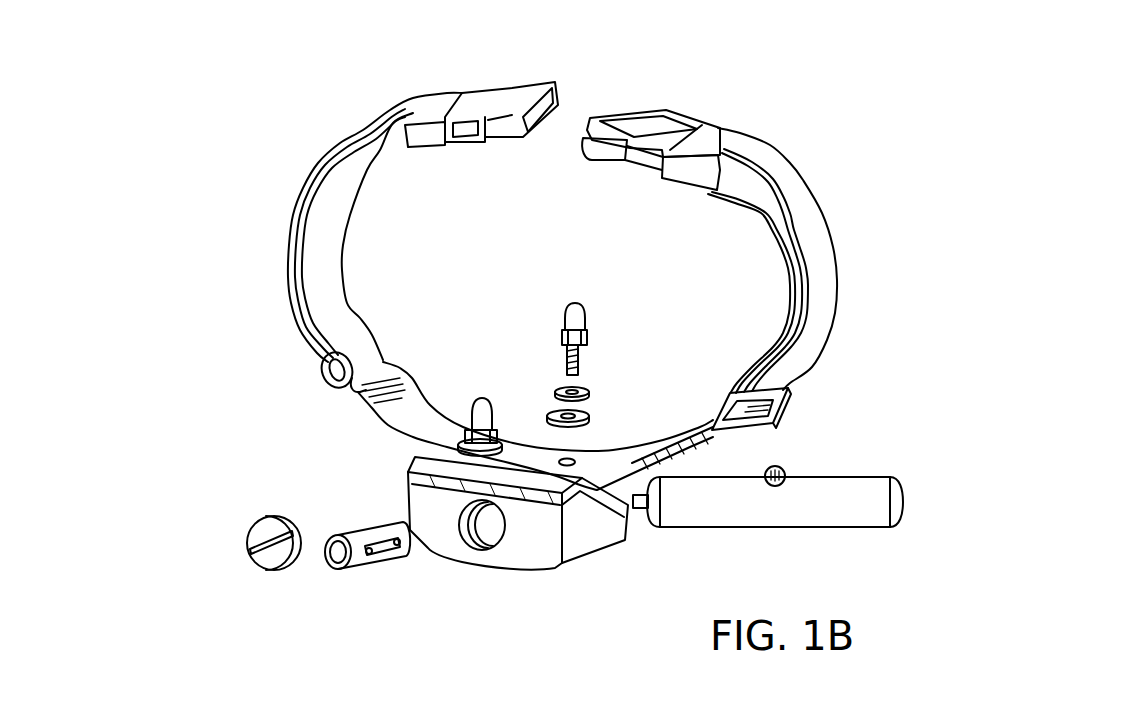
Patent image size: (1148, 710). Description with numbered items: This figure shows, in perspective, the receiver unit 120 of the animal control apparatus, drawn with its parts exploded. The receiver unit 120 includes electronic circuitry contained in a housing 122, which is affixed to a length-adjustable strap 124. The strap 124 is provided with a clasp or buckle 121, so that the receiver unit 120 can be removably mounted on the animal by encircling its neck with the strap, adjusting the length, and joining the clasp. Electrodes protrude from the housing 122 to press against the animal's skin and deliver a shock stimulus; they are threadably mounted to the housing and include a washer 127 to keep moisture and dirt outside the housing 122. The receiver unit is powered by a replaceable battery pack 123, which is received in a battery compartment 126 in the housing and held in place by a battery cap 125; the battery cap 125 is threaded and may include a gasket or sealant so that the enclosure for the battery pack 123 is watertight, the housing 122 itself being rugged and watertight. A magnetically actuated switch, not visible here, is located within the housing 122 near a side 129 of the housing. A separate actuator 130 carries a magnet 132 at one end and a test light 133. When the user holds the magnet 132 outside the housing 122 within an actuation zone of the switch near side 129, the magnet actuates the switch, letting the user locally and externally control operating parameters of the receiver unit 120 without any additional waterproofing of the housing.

The receiver unit 120 is at (849, 233).
The clasp or buckle 121 is at (642, 108).
The housing 122 is at (562, 317).
The battery pack 123 is at (360, 526).
The length-adjustable strap 124 is at (833, 313).
The battery cap 125 is at (271, 571).
The battery compartment 126 is at (460, 535).
The washer 127 is at (592, 418).
The side of the housing 129 is at (588, 505).
The actuator 130 is at (757, 528).
The magnet 132 is at (641, 513).
The test light 133 is at (781, 465).